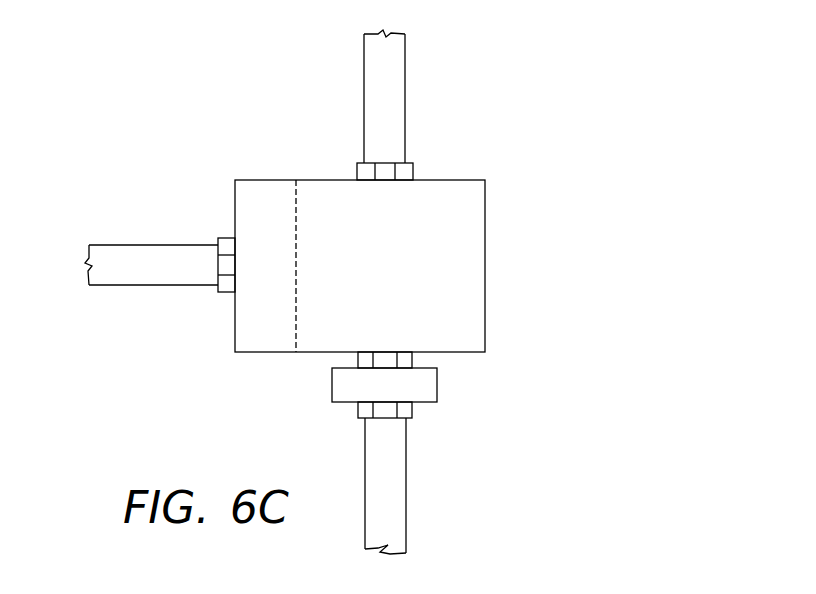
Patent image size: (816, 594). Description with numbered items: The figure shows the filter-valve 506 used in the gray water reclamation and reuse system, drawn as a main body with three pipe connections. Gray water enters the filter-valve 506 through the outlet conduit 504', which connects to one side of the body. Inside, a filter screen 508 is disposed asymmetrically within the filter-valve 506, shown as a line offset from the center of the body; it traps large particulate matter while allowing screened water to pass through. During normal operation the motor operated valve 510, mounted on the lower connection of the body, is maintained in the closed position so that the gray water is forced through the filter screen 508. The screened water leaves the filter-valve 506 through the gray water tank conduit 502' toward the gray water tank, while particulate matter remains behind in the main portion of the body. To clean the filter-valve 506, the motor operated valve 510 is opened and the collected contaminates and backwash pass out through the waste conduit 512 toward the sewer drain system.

The filter-valve 506 is at (344, 281).
The outlet conduit 504' is at (480, 96).
The gray water tank conduit 502' is at (118, 336).
The filter screen 508 is at (296, 262).
The motor operated valve (MOV) 510 is at (437, 383).
The waste conduit 512 is at (406, 480).